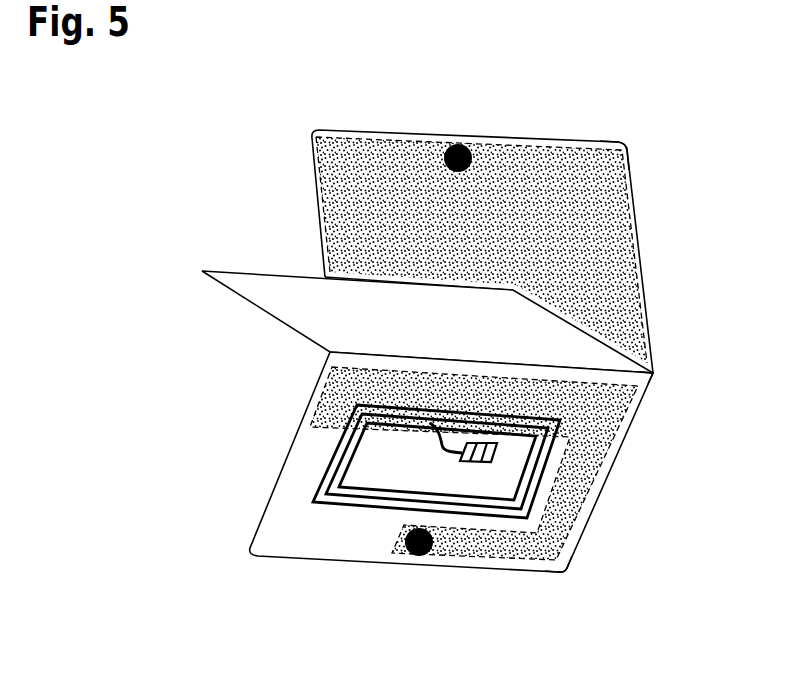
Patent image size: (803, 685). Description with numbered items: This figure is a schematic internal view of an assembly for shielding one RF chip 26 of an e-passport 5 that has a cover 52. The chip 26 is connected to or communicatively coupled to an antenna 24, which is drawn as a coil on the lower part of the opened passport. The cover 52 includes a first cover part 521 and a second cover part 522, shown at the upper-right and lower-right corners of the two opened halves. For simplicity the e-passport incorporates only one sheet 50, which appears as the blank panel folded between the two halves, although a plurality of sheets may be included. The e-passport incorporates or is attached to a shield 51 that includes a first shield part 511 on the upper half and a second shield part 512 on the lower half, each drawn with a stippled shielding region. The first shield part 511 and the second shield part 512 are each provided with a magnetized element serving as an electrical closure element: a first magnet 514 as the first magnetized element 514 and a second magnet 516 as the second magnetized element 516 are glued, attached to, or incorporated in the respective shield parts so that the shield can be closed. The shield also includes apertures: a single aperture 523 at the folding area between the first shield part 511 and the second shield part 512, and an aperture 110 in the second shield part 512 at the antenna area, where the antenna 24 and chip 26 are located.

The e-passport 5 is at (258, 167).
The sheet 50 is at (575, 315).
The shield 51 is at (350, 195).
The cover 52 is at (305, 560).
The first shield part 511 is at (600, 247).
The second shield part 512 is at (610, 437).
The first magnetized element 514 is at (417, 558).
The second magnetized element 516 is at (460, 144).
The first cover part 521 is at (628, 160).
The second cover part 522 is at (567, 560).
The aperture 523 is at (655, 376).
The aperture 110 is at (320, 452).
The antenna 24 is at (313, 485).
The chip 26 is at (480, 465).